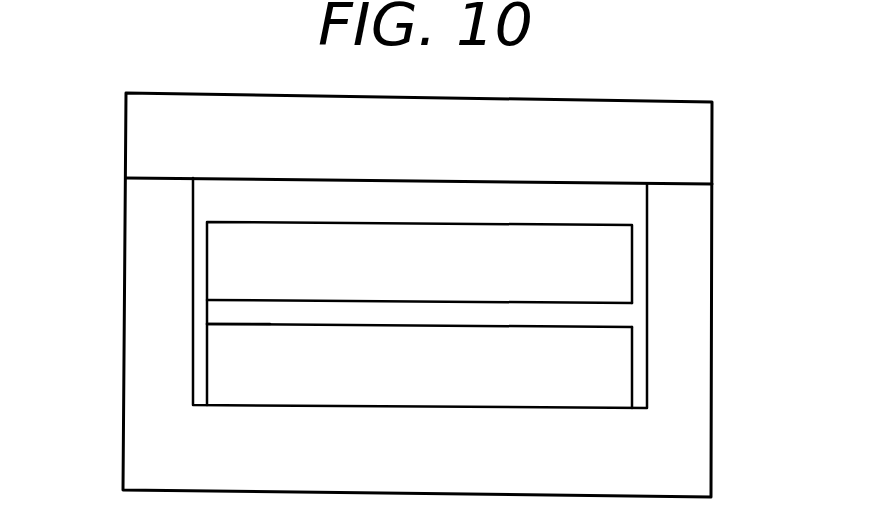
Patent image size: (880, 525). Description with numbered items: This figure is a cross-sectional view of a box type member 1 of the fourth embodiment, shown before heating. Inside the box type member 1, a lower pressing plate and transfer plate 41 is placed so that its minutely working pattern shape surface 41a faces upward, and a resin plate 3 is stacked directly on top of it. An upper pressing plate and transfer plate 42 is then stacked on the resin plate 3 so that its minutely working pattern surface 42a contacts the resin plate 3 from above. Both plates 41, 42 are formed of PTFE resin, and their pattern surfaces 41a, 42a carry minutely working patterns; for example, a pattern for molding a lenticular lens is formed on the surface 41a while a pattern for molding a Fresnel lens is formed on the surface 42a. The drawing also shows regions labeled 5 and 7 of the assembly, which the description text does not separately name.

The box type member 1 is at (685, 437).
The resin plate 3 is at (623, 315).
The upper layer 5 is at (697, 132).
The recess 7 is at (628, 208).
The pressing plate and transfer plate 41 is at (618, 373).
The minutely working pattern shape surface 41a is at (266, 323).
The pressing plate and transfer plate 42 is at (620, 262).
The minutely working pattern surface 42a is at (230, 301).